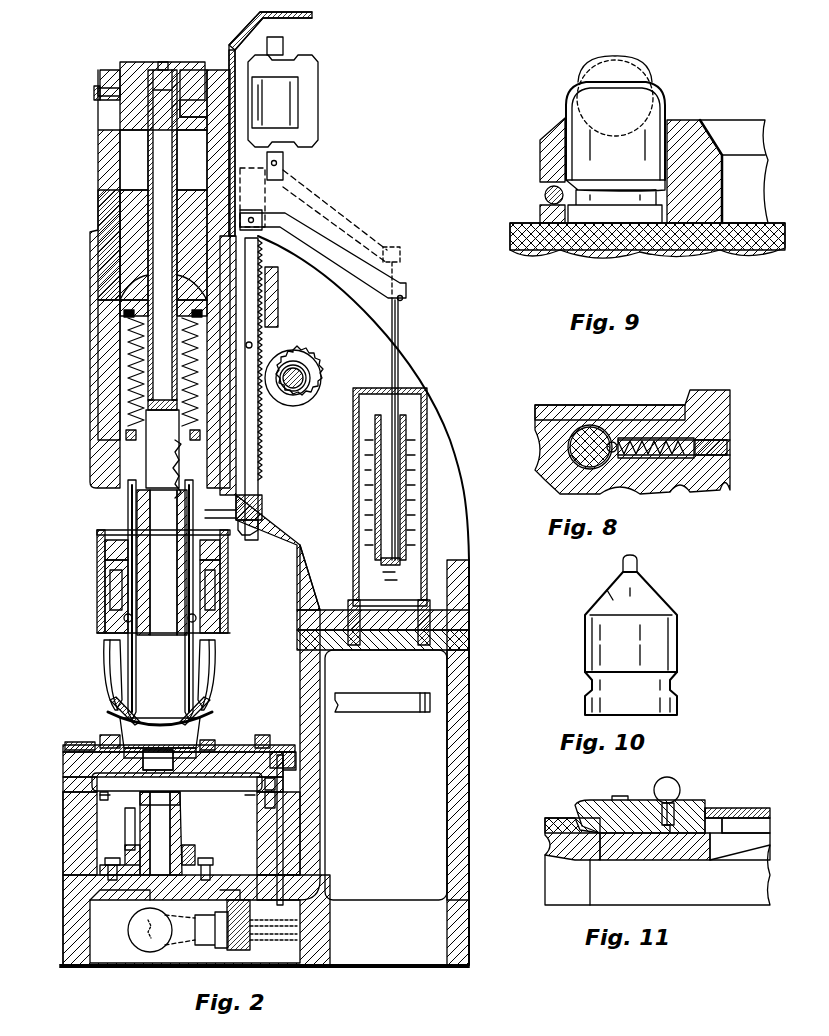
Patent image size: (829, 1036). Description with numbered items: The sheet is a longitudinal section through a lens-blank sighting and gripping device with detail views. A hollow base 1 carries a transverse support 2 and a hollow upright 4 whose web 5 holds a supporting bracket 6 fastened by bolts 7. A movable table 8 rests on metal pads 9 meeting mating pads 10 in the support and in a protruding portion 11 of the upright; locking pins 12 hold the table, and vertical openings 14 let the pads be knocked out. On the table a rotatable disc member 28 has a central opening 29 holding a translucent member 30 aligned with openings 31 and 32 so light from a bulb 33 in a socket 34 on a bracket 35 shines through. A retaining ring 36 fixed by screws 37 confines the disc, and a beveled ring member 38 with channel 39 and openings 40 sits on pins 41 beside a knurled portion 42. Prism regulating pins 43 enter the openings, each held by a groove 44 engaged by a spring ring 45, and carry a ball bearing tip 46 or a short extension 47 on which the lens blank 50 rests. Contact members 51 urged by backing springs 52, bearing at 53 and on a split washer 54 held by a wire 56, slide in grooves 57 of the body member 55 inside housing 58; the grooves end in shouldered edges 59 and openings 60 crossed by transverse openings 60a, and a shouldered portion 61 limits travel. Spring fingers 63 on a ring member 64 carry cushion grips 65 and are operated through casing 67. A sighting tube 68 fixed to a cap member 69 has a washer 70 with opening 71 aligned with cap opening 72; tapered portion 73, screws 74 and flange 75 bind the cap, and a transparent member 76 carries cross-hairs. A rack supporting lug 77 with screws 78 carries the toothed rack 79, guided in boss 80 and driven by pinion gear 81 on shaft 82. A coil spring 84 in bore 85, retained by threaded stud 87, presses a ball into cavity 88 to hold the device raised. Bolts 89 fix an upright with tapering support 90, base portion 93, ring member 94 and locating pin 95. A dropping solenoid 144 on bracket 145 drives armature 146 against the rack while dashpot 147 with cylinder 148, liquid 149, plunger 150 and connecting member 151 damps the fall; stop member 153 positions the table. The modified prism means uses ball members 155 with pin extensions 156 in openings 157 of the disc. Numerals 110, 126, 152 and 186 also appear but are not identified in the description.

In FIG. 2, the hollow base 1 is at (466, 905).
In FIG. 2, the transverse support 2 is at (70, 828).
In FIG. 2, the hollow upright 4 is at (470, 720).
In FIG. 2, the web 5 is at (375, 650).
In FIG. 2, the supporting bracket 6 is at (420, 350).
In FIG. 8, the supporting bracket 6 is at (720, 398).
In FIG. 2, the screws or bolts 7 is at (418, 672).
In FIG. 2, the movable table 8 is at (63, 777).
In FIG. 9, the movable table 8 is at (530, 268).
In FIG. 11, the movable table 8 is at (548, 880).
In FIG. 2, the removable metal pads 9 is at (275, 785).
In FIG. 2, the removable metal pads 10 is at (275, 800).
In FIG. 2, the protruding portion 11 is at (258, 830).
In FIG. 2, the locking pins 12 is at (105, 800).
In FIG. 2, the vertical openings 14 is at (330, 858).
In FIG. 2, the disc member 28 is at (255, 745).
In FIG. 9, the disc member 28 is at (512, 240).
In FIG. 11, the disc member 28 is at (582, 810).
In FIG. 2, the vertical opening 29 is at (158, 760).
In FIG. 11, the vertical opening 29 is at (735, 830).
In FIG. 2, the translucent member 30 is at (177, 782).
In FIG. 11, the translucent member 30 is at (738, 808).
In FIG. 2, the opening 31 is at (165, 789).
In FIG. 11, the opening 31 is at (728, 860).
In FIG. 2, the opening 32 is at (155, 893).
In FIG. 2, the bulb 33 is at (128, 940).
In FIG. 2, the socket 34 is at (210, 945).
In FIG. 2, the bracket 35 is at (270, 912).
In FIG. 2, the retaining ring 36 is at (262, 735).
In FIG. 2, the screws 37 is at (75, 743).
In FIG. 2, the beveled ring member 38 is at (100, 735).
In FIG. 9, the beveled ring member 38 is at (540, 142).
In FIG. 9, the groove or channel 39 is at (542, 190).
In FIG. 9, the vertical openings 40 is at (668, 188).
In FIG. 2, the pins 41 is at (177, 784).
In FIG. 2, the knurled portion 42 is at (215, 742).
In FIG. 11, the knurled portion 42 is at (620, 796).
In FIG. 2, the prism regulating pins 43 is at (210, 712).
In FIG. 9, the prism regulating pins 43 is at (558, 88).
In FIG. 10, the prism regulating pins 43 is at (578, 645).
In FIG. 9, the circumferential groove 44 is at (610, 182).
In FIG. 10, the circumferential groove 44 is at (675, 685).
In FIG. 9, the circular spring clip or ring 45 is at (545, 195).
In FIG. 9, the ball bearing tip 46 is at (630, 60).
In FIG. 10, the short extension 47 is at (637, 565).
In FIG. 2, the lens blank 50 is at (160, 715).
In FIG. 2, the contact members 51 is at (172, 672).
In FIG. 2, the backing springs 52 is at (185, 340).
In FIG. 2, the spring engagement point 53 is at (126, 432).
In FIG. 2, the split washer 54 is at (128, 303).
In FIG. 2, the body member 55 is at (112, 212).
In FIG. 2, the spring clip or wire 56 is at (124, 313).
In FIG. 2, the longitudinal grooves 57 is at (128, 395).
In FIG. 2, the housing 58 is at (98, 150).
In FIG. 2, the shouldered edges 59 is at (112, 555).
In FIG. 2, the openings 60 is at (115, 585).
In FIG. 2, the transversely extending openings 60a is at (124, 618).
In FIG. 2, the shouldered portion 61 is at (118, 545).
In FIG. 2, the spring fingers 63 is at (232, 668).
In FIG. 2, the ring member 64 is at (105, 530).
In FIG. 2, the cushion grips 65 is at (208, 705).
In FIG. 2, the casing 67 is at (98, 560).
In FIG. 2, the sighting tube 68 is at (140, 143).
In FIG. 2, the cap member 69 is at (120, 62).
In FIG. 2, the washer 70 is at (190, 75).
In FIG. 2, the restricted opening 71 is at (163, 100).
In FIG. 2, the restricted opening 72 is at (163, 60).
In FIG. 2, the tapered portion 73 is at (122, 90).
In FIG. 2, the screws 74 is at (96, 110).
In FIG. 2, the flange portion 75 is at (112, 70).
In FIG. 2, the transparent member 76 is at (160, 412).
In FIG. 2, the rack supporting lug 77 is at (262, 510).
In FIG. 2, the screws 78 is at (246, 535).
In FIG. 2, the toothed rack 79 is at (258, 445).
In FIG. 8, the toothed rack 79 is at (582, 460).
In FIG. 2, the boss 80 is at (278, 300).
In FIG. 8, the boss 80 is at (585, 415).
In FIG. 2, the pinion gear 81 is at (321, 370).
In FIG. 2, the shaft 82 is at (303, 385).
In FIG. 8, the coil spring 84 is at (660, 460).
In FIG. 8, the transverse bore 85 is at (638, 438).
In FIG. 8, the threaded stud 87 is at (727, 447).
In FIG. 2, the cavity or indentation 88 is at (252, 343).
In FIG. 2, the bolts 89 is at (222, 858).
In FIG. 2, the tapering support 90 is at (180, 828).
In FIG. 2, the base portion 93 is at (100, 870).
In FIG. 2, the ring member 94 is at (195, 850).
In FIG. 2, the vertical locating pin 95 is at (125, 828).
In FIG. 2, the motor unit 110 is at (385, 715).
In FIG. 2, the compartment 126 is at (447, 683).
In FIG. 2, the dropping solenoid 144 is at (285, 100).
In FIG. 2, the bracket 145 is at (305, 18).
In FIG. 2, the armature 146 is at (283, 160).
In FIG. 2, the dashpot 147 is at (432, 520).
In FIG. 2, the cylinder 148 is at (427, 458).
In FIG. 2, the liquid 149 is at (420, 552).
In FIG. 2, the plunger 150 is at (398, 320).
In FIG. 2, the connecting member 151 is at (360, 248).
In FIG. 2, the bore 152 is at (170, 810).
In FIG. 2, the adjustable stop member 153 is at (296, 768).
In FIG. 11, the ball members 155 is at (675, 780).
In FIG. 11, the pin extensions 156 is at (674, 815).
In FIG. 11, the vertical openings 157 is at (667, 833).
In FIG. 8, the ball 186 is at (614, 440).